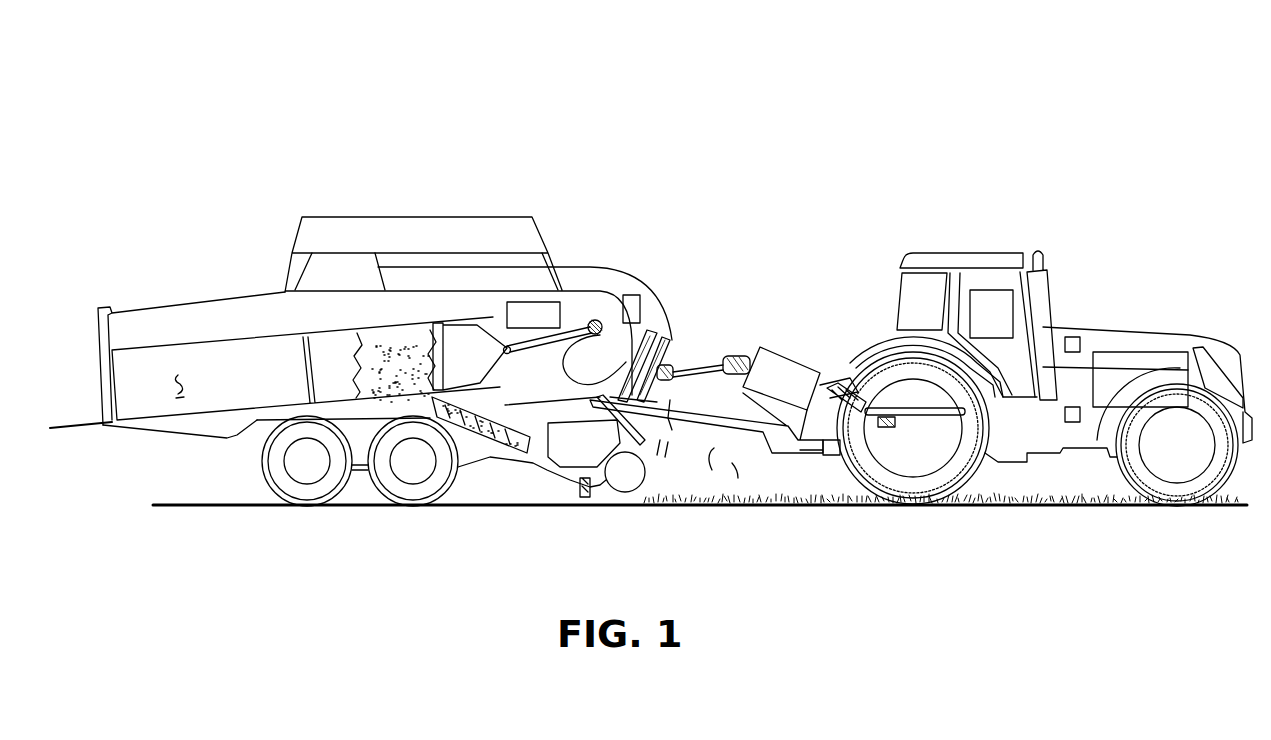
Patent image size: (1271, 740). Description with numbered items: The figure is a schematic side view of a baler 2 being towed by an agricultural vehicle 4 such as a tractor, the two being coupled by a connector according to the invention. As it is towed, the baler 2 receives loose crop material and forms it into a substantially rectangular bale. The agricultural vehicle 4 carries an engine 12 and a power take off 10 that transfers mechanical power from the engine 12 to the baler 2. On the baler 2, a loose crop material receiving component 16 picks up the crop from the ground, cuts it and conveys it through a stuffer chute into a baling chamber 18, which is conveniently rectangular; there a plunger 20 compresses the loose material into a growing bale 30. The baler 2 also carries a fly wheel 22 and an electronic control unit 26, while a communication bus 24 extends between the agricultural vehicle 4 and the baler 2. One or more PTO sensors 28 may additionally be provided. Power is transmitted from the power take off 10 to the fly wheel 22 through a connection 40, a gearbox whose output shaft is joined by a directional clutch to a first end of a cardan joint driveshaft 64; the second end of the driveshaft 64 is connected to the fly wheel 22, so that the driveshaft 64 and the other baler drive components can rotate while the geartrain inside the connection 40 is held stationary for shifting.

The baler 2 is at (535, 158).
The agricultural vehicle 4 is at (975, 230).
The power take off 10 is at (923, 417).
The engine 12 is at (1132, 363).
The loose crop material receiving component 16 is at (585, 497).
The baling chamber 18 is at (394, 345).
The plunger 20 is at (468, 352).
The fly wheel 22 is at (630, 350).
The communication bus 24 is at (993, 303).
The electronic control unit 26 is at (538, 312).
The PTO sensor 28 is at (885, 427).
The growing bale 30 is at (322, 348).
The connection 40 is at (783, 347).
The cardan joint driveshaft 64 is at (703, 363).